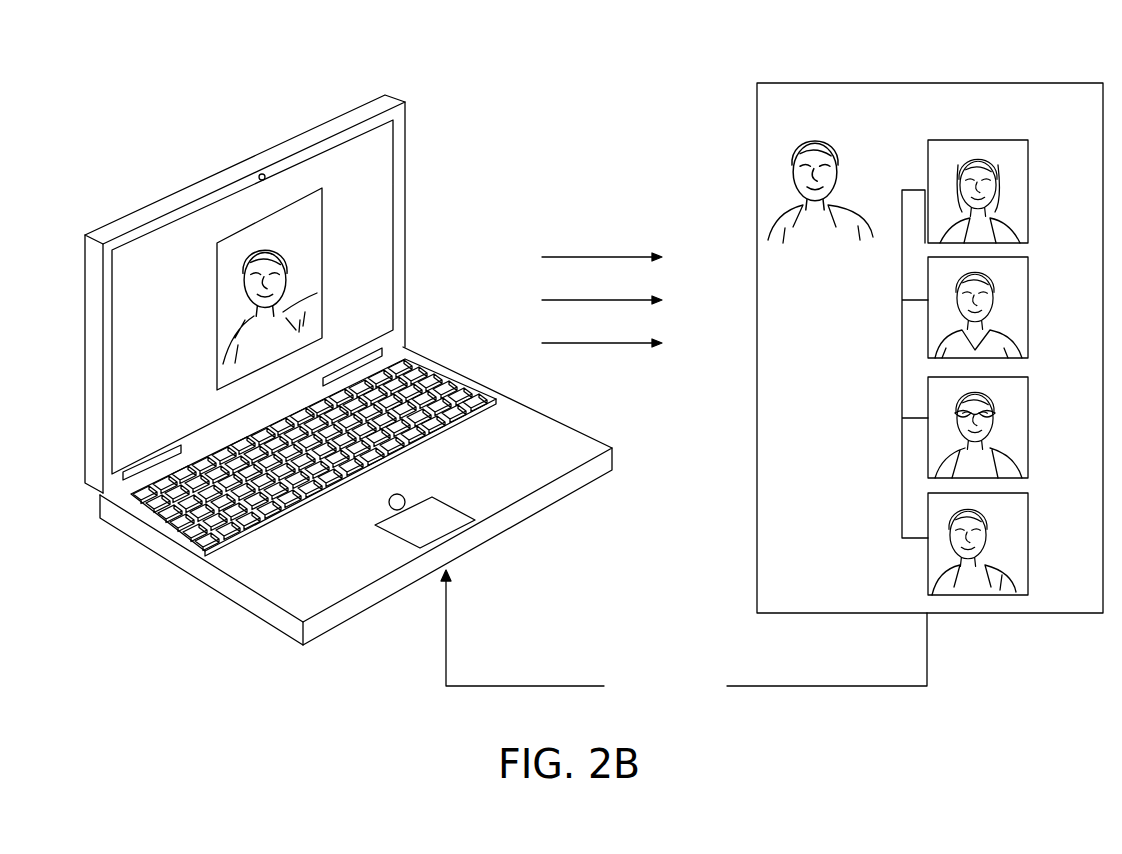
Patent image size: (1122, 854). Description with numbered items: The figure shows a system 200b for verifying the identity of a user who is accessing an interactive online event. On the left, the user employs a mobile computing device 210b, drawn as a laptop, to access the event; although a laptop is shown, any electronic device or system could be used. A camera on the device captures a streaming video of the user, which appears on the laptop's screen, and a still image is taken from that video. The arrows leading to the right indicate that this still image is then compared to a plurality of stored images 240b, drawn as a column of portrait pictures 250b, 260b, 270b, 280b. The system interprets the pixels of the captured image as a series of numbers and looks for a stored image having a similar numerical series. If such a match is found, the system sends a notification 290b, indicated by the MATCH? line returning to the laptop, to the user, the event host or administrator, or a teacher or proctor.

The system 200b is at (291, 99).
The mobile computing device 210b is at (183, 573).
The stored images 240b is at (913, 187).
The reference image 250b is at (1020, 165).
The reference image 260b is at (1033, 273).
The reference image 270b is at (1013, 397).
The reference image 280b is at (1022, 512).
The notification 290b is at (642, 677).